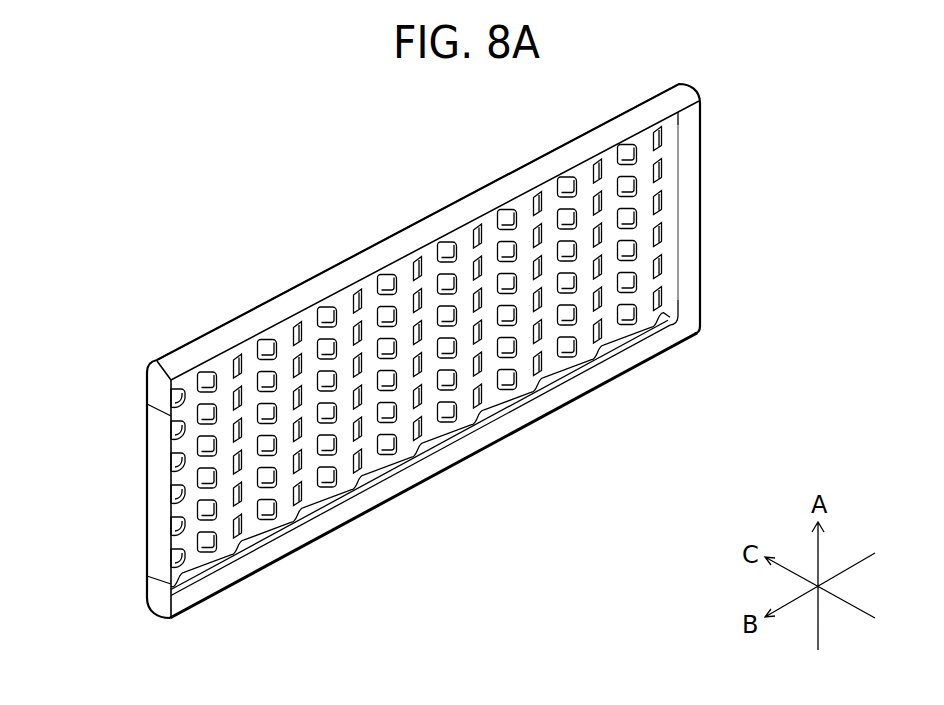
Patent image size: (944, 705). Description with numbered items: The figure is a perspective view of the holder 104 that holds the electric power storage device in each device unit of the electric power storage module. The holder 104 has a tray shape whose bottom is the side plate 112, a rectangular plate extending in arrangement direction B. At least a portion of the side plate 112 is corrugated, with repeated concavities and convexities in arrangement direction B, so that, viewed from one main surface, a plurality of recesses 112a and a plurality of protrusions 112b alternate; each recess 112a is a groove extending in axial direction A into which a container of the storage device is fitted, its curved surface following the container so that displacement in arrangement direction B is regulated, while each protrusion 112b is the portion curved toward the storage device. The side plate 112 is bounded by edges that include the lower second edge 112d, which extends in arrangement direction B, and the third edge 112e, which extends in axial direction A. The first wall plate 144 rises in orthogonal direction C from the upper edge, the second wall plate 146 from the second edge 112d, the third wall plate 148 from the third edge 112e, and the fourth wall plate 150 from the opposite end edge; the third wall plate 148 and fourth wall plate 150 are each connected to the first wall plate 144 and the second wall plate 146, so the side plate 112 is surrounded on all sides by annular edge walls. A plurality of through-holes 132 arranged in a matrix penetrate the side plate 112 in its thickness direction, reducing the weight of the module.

The holder 104 is at (503, 622).
The side plate 112 is at (652, 318).
The recess 112a is at (612, 333).
The protrusion 112b is at (584, 352).
The second edge 112d is at (313, 512).
The third edge 112e is at (672, 208).
The through-hole 132 is at (462, 410).
The first wall plate 144 is at (567, 150).
The second wall plate 146 is at (222, 578).
The third wall plate 148 is at (700, 170).
The fourth wall plate 150 is at (156, 500).